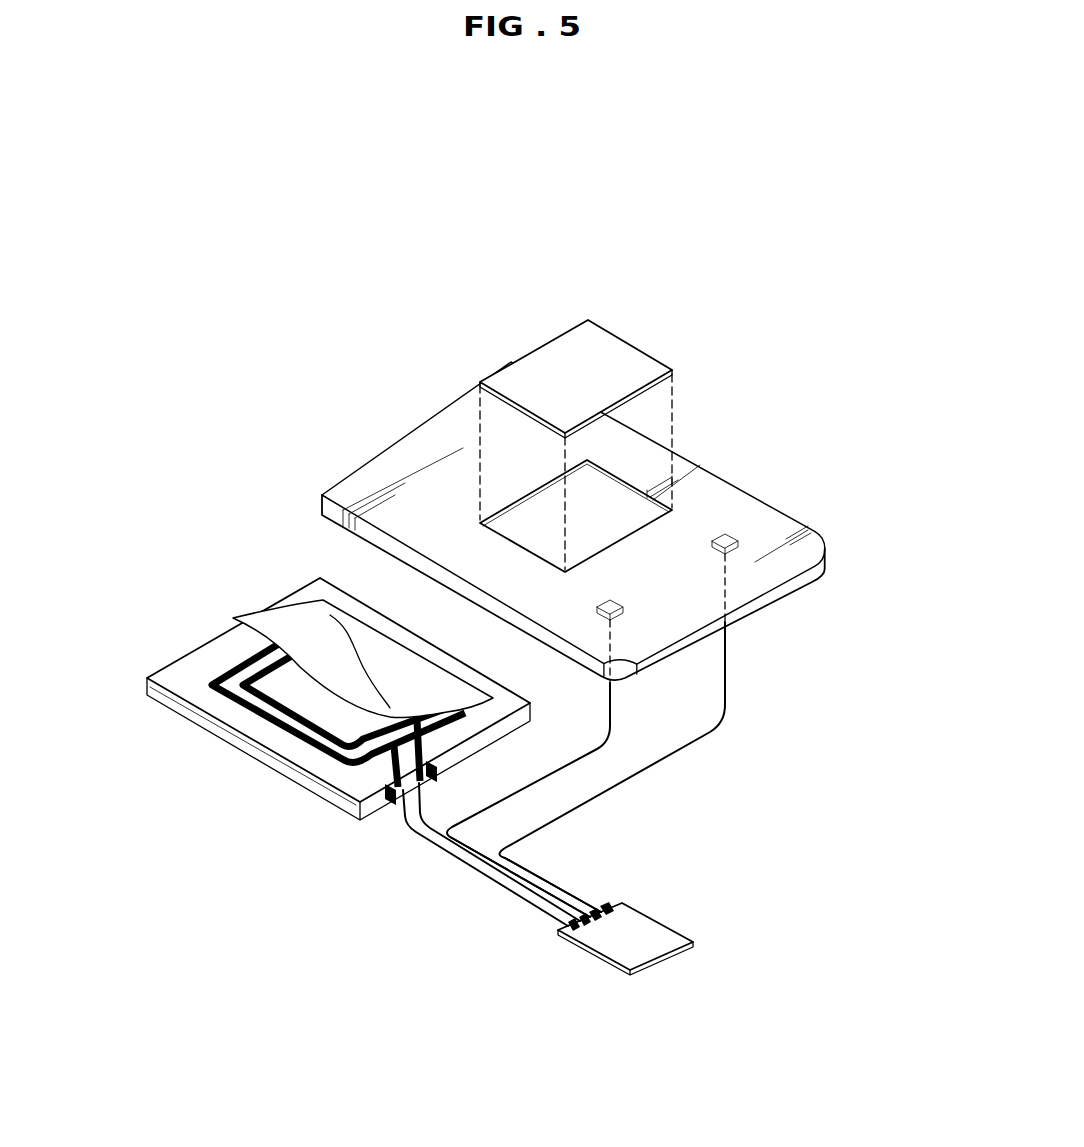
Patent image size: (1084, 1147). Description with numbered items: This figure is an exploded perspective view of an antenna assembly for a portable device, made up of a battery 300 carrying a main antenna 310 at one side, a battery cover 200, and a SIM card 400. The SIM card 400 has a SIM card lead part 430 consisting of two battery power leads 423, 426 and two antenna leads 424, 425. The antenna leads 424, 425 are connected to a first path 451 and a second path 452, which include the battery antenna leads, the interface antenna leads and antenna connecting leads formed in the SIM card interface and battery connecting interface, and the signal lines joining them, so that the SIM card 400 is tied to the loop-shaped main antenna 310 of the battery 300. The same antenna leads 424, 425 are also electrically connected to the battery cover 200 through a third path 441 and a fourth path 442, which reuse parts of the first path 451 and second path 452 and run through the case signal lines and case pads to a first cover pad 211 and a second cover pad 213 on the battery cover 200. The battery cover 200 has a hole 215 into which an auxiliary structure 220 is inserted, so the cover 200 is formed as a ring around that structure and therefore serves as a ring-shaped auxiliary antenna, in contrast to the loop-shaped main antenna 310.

The battery cover 200 is at (351, 472).
The first cover pad 211 is at (731, 533).
The second cover pad 213 is at (600, 620).
The hole 215 is at (630, 518).
The auxiliary structure 220 is at (600, 335).
The battery 300 is at (184, 642).
The main antenna 310 is at (280, 725).
The SIM card 400 is at (624, 981).
The battery power lead 423 is at (573, 931).
The SIM card antenna lead 424 is at (584, 926).
The SIM card antenna lead 425 is at (595, 921).
The battery power lead 426 is at (606, 915).
The SIM card lead part 430 is at (618, 1002).
The third path 441 is at (614, 702).
The fourth path 442 is at (729, 670).
The first path 451 is at (492, 876).
The second path 452 is at (547, 887).